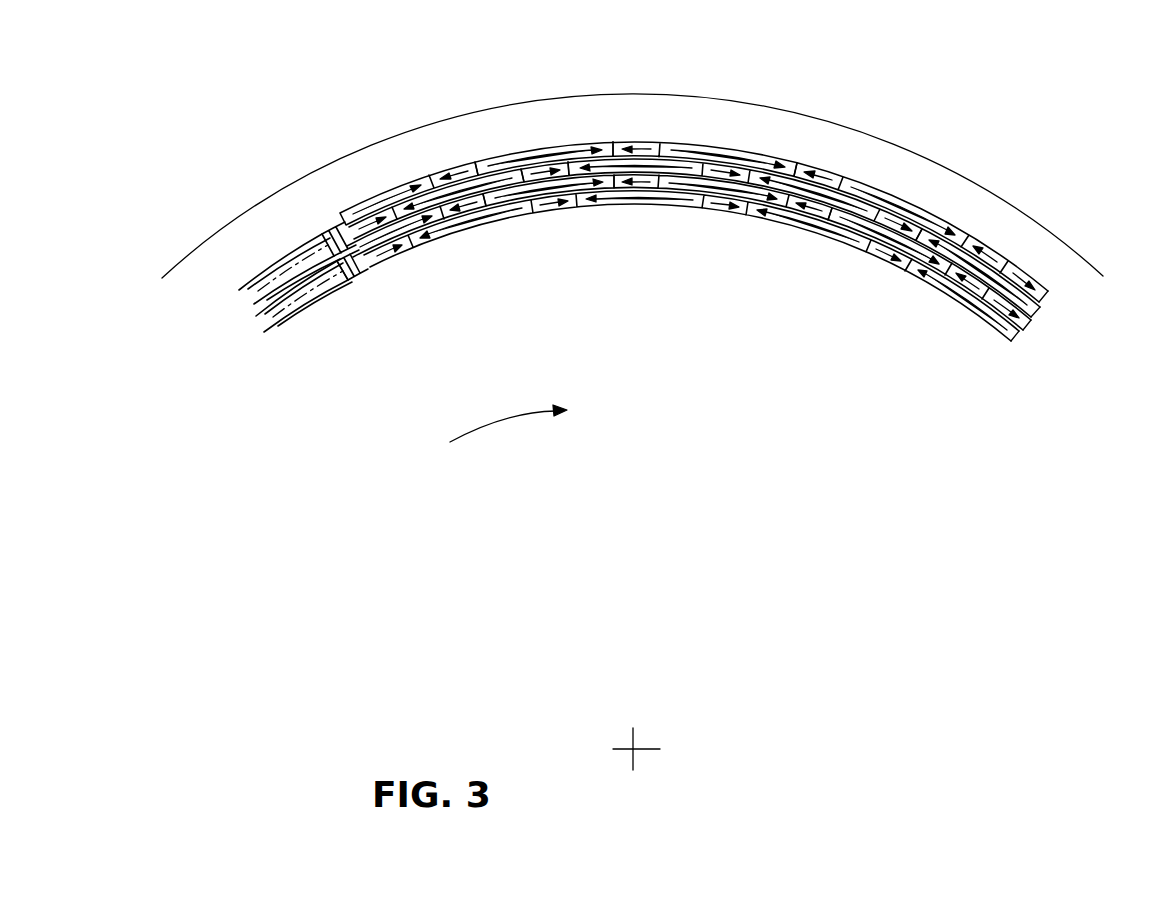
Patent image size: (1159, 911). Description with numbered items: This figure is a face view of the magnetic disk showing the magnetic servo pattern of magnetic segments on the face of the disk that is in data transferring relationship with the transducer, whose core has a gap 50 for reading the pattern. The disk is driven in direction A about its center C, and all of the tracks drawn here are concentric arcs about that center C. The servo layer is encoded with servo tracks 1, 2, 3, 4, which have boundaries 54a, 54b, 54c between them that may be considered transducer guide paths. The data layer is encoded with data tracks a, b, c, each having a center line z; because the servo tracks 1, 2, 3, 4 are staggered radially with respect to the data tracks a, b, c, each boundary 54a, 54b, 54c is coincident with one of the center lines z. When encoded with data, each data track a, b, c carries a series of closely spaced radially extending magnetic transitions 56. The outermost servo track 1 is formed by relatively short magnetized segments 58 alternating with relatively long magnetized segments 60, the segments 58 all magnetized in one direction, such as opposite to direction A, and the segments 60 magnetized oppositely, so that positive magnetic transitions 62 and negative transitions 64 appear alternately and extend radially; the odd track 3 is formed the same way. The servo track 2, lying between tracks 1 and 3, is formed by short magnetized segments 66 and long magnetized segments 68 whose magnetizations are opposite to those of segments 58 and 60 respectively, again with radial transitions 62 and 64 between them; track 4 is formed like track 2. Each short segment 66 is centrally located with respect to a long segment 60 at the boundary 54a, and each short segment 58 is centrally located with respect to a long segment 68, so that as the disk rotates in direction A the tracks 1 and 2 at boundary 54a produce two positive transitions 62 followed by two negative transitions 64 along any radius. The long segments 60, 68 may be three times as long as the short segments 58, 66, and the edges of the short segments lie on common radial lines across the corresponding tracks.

The gap 50 is at (1022, 283).
The short magnetized segments 58 is at (1027, 285).
The short magnetized segments 66 is at (987, 248).
The long magnetized segments 60 is at (937, 218).
The servo track boundary 54c is at (962, 290).
The servo track boundary 54a is at (927, 215).
The servo track boundary 54b is at (848, 218).
The long magnetized segments 68 is at (820, 190).
The positive magnetic transitions 62 is at (617, 158).
The negative magnetic transitions 64 is at (518, 168).
The magnetic transitions 56 is at (306, 243).
The data track a is at (287, 266).
The data track b is at (247, 287).
The data track c is at (276, 300).
The data track center line z is at (313, 283).
The servo track 1 is at (1044, 300).
The servo track 2 is at (1033, 318).
The servo track 3 is at (1023, 333).
The servo track 4 is at (1012, 347).
The direction of rotation A is at (508, 420).
The center of the disk C is at (636, 746).